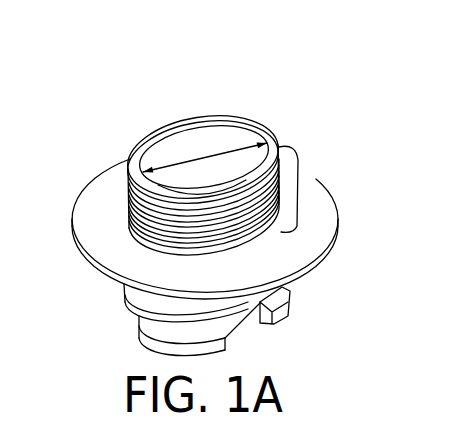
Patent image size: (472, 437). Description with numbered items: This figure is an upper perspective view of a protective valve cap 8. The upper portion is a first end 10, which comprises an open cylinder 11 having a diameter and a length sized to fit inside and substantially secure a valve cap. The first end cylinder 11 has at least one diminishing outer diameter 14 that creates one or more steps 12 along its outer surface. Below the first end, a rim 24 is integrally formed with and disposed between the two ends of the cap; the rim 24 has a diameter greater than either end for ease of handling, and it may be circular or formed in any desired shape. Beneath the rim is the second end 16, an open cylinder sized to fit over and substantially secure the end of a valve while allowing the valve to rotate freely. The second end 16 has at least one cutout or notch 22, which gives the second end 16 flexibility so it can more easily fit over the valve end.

The protective valve cap 8 is at (122, 104).
The first end 10 is at (300, 192).
The cylinder 11 is at (152, 118).
The steps 12 is at (143, 199).
The diminishing outer diameter 14 is at (218, 152).
The second end 16 is at (277, 337).
The notch 22 is at (247, 333).
The rim 24 is at (334, 233).